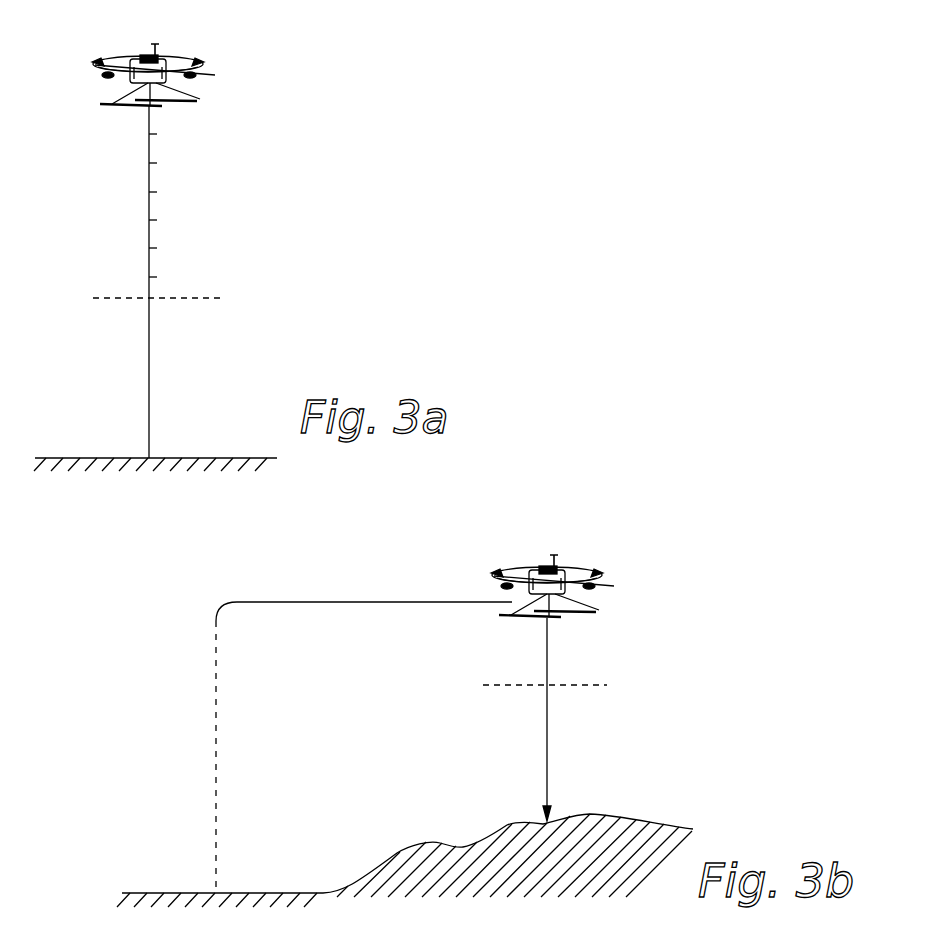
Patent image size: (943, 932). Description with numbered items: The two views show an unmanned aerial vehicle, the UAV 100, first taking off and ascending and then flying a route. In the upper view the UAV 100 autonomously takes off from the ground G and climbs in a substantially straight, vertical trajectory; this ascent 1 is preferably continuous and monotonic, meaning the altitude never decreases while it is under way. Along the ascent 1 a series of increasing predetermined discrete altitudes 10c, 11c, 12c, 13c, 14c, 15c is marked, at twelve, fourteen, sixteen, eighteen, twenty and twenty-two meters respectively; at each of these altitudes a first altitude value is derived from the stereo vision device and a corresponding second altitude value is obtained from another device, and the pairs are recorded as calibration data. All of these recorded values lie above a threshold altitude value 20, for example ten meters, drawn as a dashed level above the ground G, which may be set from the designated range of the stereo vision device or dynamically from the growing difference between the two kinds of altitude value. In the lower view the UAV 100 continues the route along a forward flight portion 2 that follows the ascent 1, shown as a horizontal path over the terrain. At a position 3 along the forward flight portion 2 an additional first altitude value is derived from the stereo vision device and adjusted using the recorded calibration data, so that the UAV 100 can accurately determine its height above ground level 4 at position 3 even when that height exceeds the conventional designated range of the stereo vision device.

In FIG. 3a, the UAV 100 is at (158, 63).
In FIG. 3b, the UAV 100 is at (554, 574).
In FIG. 3b, the position 3 is at (573, 565).
In FIG. 3a, the ascent 1 is at (150, 372).
In FIG. 3b, the ascent 1 is at (216, 812).
In FIG. 3b, the forward flight portion 2 is at (336, 603).
In FIG. 3b, the height above ground level 4 is at (548, 741).
In FIG. 3a, the ground G is at (148, 457).
In FIG. 3a, the threshold altitude value 20 is at (118, 299).
In FIG. 3b, the threshold altitude value 20 is at (517, 688).
In FIG. 3a, the predetermined discrete altitude 10c is at (173, 277).
In FIG. 3a, the predetermined discrete altitude 11c is at (173, 248).
In FIG. 3a, the predetermined discrete altitude 12c is at (173, 220).
In FIG. 3a, the predetermined discrete altitude 13c is at (173, 192).
In FIG. 3a, the predetermined discrete altitude 14c is at (173, 163).
In FIG. 3a, the predetermined discrete altitude 15c is at (173, 134).